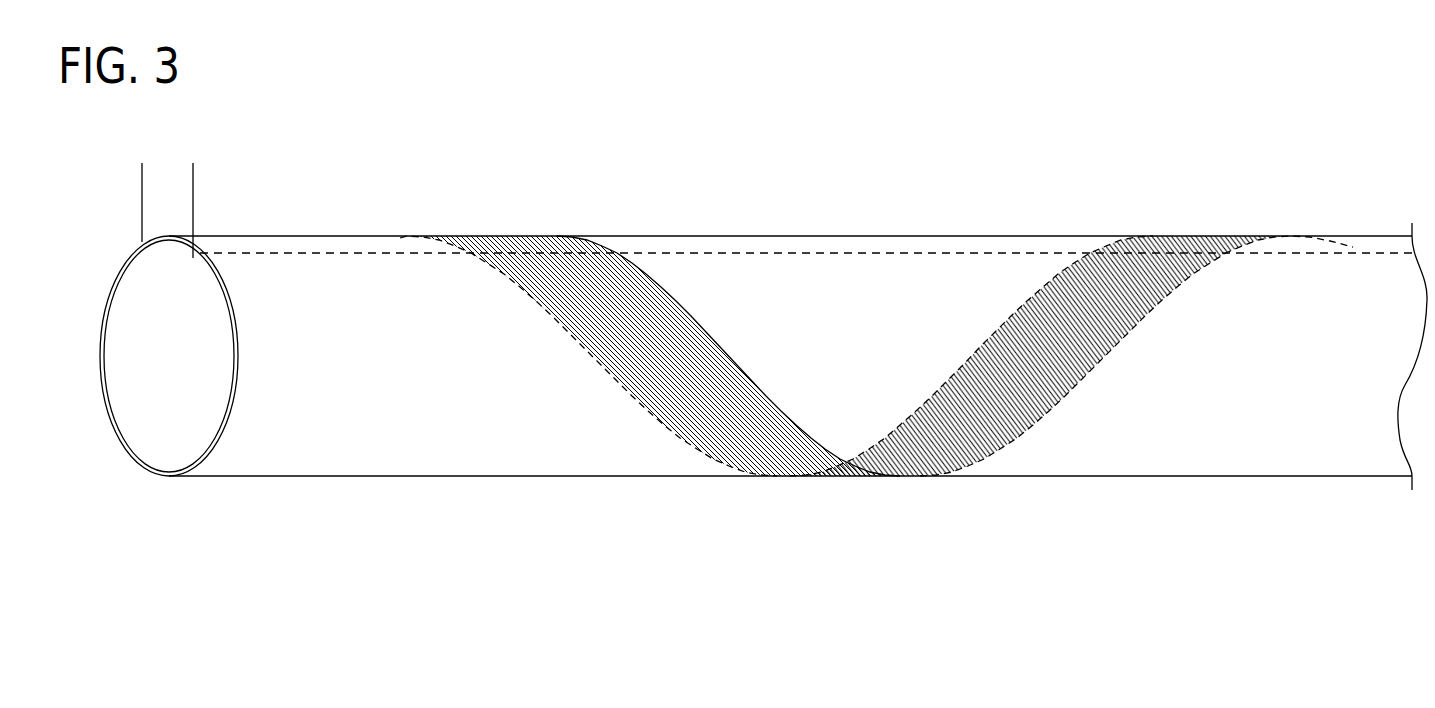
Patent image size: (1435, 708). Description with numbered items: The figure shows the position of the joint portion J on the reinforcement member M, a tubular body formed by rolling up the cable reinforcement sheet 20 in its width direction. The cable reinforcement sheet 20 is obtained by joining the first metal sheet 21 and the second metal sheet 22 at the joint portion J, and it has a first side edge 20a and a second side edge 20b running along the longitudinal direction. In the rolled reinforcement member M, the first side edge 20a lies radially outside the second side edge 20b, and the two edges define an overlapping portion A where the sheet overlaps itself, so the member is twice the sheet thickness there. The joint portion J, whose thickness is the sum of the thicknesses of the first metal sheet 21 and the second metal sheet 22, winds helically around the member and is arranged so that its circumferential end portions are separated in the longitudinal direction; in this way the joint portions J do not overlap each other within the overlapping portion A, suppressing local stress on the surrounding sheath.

The cable reinforcement sheet 20 is at (647, 555).
The first side edge 20a is at (142, 243).
The second side edge 20b is at (192, 258).
The first metal sheet 21 is at (663, 480).
The second metal sheet 22 is at (1037, 480).
The joint portion J is at (668, 369).
The overlapping portion A is at (193, 177).
The reinforcement member M is at (106, 200).